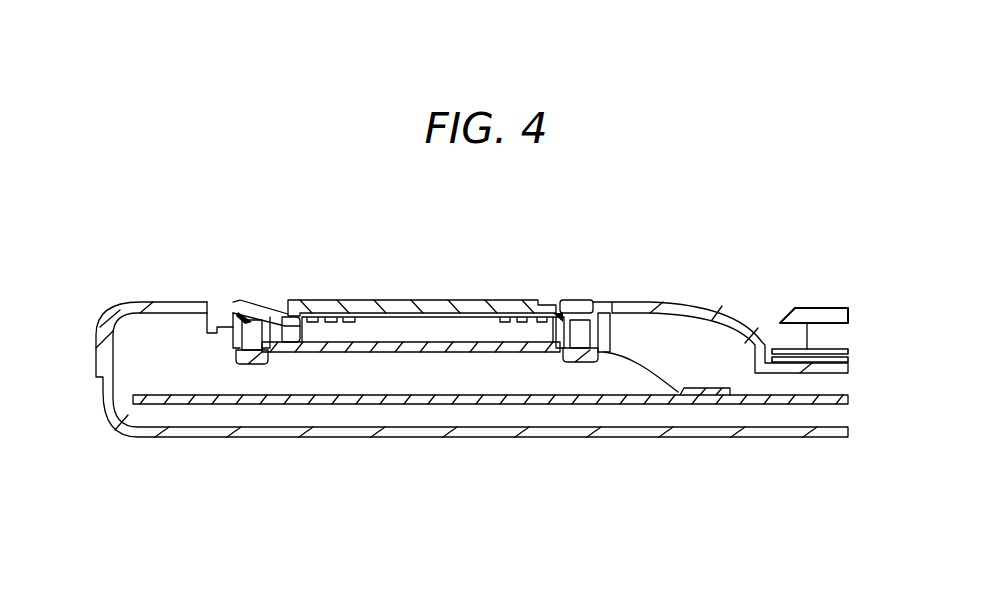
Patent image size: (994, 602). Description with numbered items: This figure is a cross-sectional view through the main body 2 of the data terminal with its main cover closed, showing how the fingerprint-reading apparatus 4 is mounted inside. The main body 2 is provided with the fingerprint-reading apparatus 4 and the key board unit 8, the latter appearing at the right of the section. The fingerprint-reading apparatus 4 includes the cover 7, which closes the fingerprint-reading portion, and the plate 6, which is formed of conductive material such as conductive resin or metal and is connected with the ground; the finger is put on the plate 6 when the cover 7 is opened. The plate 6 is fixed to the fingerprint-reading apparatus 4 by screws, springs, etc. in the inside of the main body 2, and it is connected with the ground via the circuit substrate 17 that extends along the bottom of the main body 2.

The main body 2 is at (233, 432).
The fingerprint-reading apparatus 4 is at (417, 327).
The plate 6 is at (232, 300).
The cover 7 is at (355, 300).
The key board unit 8 is at (806, 306).
The circuit substrate 17 is at (798, 405).